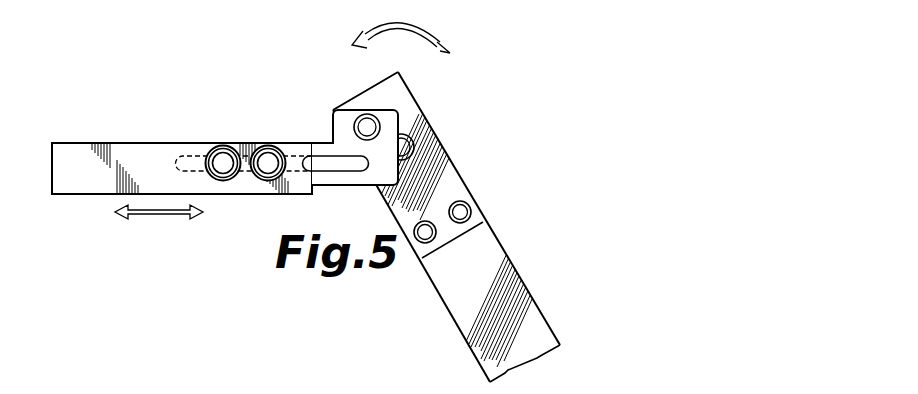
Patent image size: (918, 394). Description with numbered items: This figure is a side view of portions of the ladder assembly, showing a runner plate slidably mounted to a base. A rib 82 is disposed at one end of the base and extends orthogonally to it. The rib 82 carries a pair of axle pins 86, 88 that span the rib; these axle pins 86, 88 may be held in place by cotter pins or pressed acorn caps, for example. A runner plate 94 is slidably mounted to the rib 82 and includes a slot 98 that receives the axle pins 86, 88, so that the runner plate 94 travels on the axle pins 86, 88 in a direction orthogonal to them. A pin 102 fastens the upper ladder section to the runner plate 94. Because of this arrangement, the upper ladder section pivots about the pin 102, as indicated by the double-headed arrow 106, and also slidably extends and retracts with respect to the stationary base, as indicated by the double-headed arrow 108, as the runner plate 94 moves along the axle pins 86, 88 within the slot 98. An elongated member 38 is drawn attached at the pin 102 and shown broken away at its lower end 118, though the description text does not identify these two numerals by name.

The support arm 38 is at (509, 258).
The rib 82 is at (108, 143).
The axle pin 86 is at (226, 146).
The axle pin 88 is at (270, 146).
The runner plate 94 is at (403, 168).
The slot 98 is at (311, 165).
The pin 102 is at (378, 118).
The double-headed arrow 106 is at (430, 32).
The double-headed arrow 108 is at (158, 215).
The arm end 118 is at (479, 369).